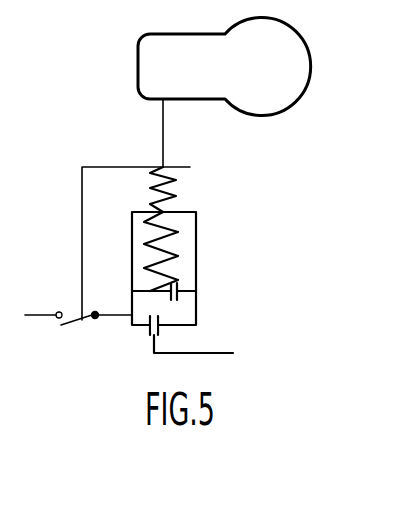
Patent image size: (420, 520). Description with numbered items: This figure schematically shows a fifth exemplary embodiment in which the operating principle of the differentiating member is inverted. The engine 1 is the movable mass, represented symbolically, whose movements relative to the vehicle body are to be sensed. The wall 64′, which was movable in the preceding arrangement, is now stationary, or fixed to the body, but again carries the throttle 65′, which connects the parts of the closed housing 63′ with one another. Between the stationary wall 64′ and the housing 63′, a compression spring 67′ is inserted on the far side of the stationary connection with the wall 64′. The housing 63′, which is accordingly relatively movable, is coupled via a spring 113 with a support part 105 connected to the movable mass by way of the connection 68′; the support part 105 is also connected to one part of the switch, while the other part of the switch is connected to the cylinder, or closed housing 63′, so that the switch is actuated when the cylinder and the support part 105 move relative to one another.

The internal combustion engine 1 is at (160, 52).
The connecting lead 68′ is at (170, 127).
The support part 105 is at (160, 165).
The spring 113 is at (172, 183).
The closed housing 63′ is at (196, 250).
The compression spring 67′ is at (178, 234).
The stationary wall 64′ is at (178, 287).
The throttle 65′ is at (196, 318).